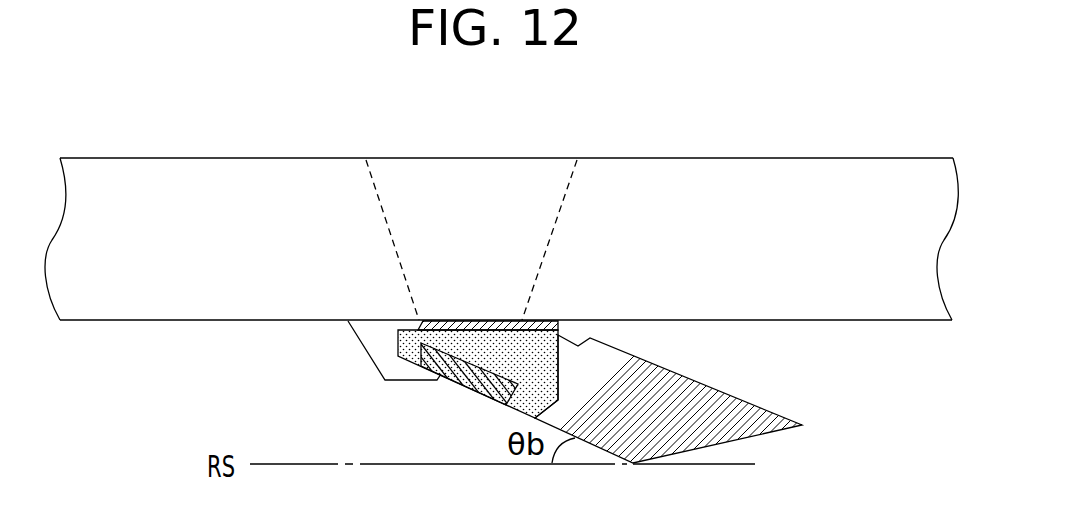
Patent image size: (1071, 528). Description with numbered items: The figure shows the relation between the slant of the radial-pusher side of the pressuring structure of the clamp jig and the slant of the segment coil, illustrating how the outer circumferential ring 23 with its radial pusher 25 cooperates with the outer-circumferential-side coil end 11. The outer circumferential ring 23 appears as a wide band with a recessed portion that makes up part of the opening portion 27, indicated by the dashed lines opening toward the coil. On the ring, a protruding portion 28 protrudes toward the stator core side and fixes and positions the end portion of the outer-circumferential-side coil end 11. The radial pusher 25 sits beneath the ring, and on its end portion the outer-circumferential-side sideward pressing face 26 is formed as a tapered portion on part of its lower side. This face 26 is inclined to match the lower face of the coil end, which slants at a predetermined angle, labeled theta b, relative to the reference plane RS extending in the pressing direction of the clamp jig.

The outer circumferential ring 23 is at (265, 178).
The opening portion 27 is at (478, 177).
The radial pusher 25 is at (535, 355).
The outer-circumferential-side sideward pressing face 26 is at (480, 388).
The protruding portion 28 is at (385, 350).
The outer-circumferential-side coil end 11 is at (722, 395).